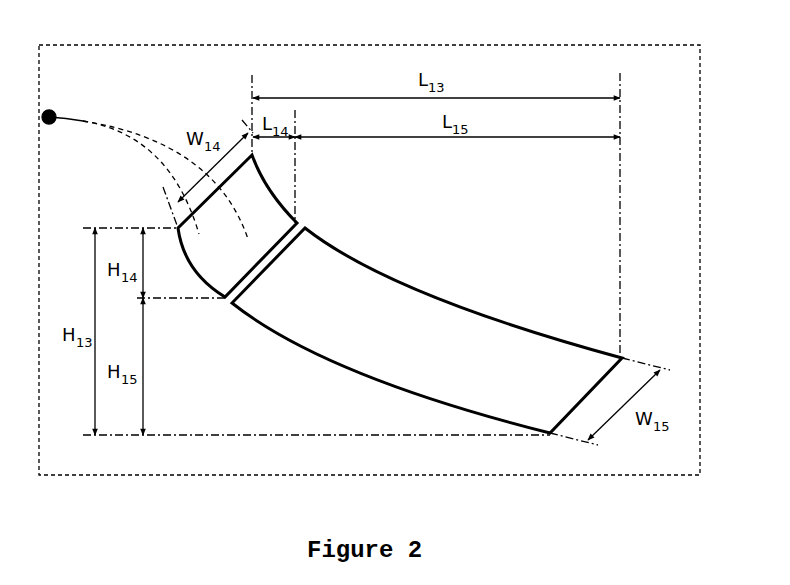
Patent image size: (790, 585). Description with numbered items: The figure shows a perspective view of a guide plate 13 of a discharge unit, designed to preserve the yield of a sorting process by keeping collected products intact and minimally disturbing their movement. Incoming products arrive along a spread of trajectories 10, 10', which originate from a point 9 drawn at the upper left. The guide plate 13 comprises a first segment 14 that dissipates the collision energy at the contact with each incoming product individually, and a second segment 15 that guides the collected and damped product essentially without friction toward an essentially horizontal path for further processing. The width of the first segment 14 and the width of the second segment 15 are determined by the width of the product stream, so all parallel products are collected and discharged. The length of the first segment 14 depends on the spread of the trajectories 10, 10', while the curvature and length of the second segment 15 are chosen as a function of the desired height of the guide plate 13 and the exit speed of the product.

The pivot point 9 is at (55, 107).
The trajectory 10 is at (164, 180).
The trajectory 10' is at (141, 165).
The guide plate 13 is at (452, 477).
The first segment 14 is at (237, 226).
The second segment 15 is at (427, 330).